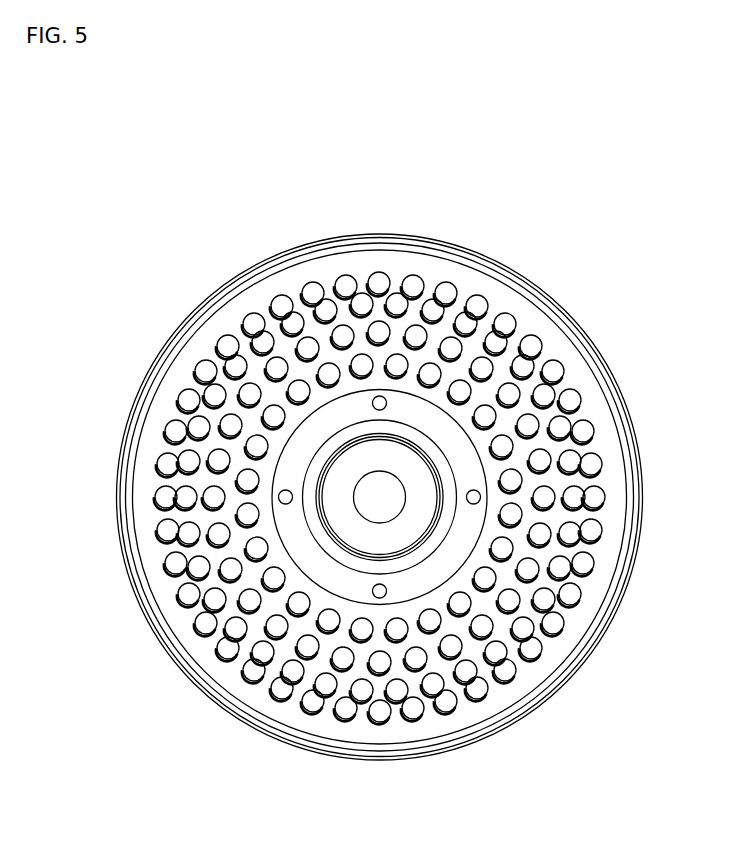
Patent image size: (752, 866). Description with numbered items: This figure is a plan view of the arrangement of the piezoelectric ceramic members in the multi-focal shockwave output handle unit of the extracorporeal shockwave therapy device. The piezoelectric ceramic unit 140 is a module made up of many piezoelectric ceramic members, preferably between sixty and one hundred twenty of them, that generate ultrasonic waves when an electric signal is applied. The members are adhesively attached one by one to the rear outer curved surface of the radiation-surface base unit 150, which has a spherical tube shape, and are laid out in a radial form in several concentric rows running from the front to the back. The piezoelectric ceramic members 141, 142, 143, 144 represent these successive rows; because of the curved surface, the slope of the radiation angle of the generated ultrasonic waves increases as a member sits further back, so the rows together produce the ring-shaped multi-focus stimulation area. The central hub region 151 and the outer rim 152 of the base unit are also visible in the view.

The piezoelectric ceramic unit 140 is at (435, 498).
The piezoelectric ceramic member 141 is at (593, 463).
The piezoelectric ceramic member 142 is at (577, 497).
The piezoelectric ceramic member 143 is at (542, 533).
The piezoelectric ceramic member 144 is at (493, 570).
The radiation-surface base unit 150 is at (497, 287).
The central hub 151 is at (347, 392).
The rim 152 is at (600, 366).